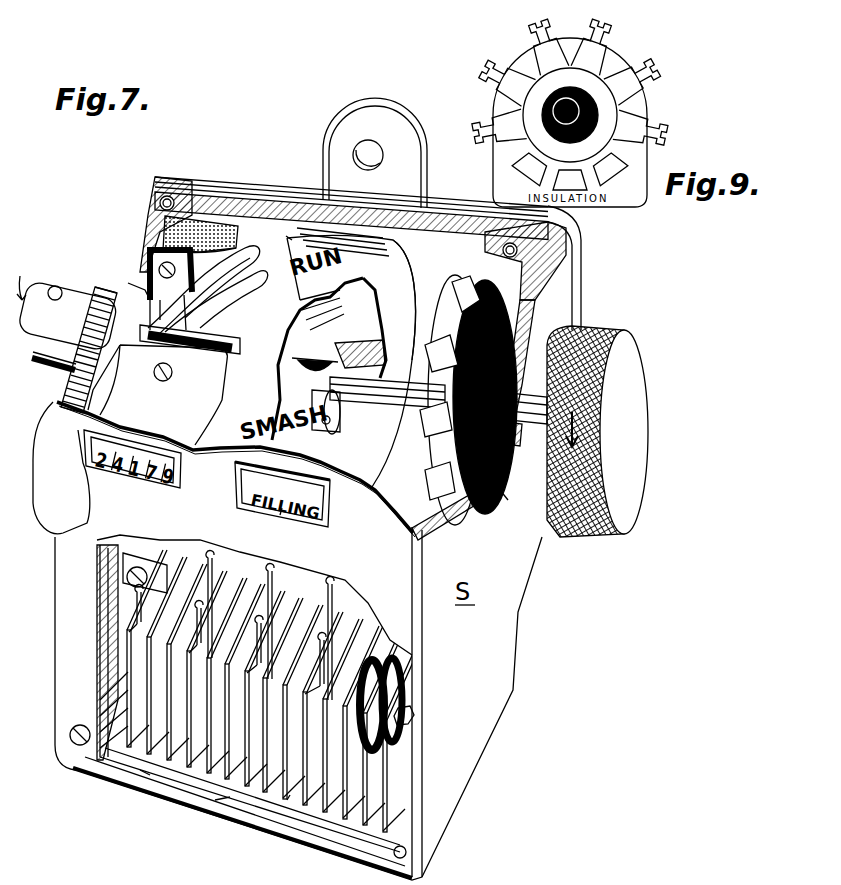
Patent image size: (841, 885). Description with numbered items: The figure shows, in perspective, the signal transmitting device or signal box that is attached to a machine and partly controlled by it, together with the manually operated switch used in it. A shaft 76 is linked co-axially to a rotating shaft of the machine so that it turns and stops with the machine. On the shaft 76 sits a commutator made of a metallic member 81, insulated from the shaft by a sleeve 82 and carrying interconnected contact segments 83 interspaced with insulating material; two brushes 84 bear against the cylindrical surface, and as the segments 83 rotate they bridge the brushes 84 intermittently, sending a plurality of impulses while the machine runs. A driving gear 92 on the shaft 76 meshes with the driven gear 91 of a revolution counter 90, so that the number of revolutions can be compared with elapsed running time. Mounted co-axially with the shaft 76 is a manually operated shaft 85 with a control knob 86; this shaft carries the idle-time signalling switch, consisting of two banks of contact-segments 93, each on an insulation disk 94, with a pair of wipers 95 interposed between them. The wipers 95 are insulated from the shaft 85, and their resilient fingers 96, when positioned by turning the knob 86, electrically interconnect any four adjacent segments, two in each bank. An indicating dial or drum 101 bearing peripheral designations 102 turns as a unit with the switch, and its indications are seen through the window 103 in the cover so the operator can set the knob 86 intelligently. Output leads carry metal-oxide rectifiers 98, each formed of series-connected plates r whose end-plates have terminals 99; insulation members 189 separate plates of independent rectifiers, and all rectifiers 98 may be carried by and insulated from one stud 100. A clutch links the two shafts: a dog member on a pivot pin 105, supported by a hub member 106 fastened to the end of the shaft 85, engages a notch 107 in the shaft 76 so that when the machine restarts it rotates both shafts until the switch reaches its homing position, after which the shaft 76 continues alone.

In FIG. 7, the shaft 76 is at (66, 292).
In FIG. 7, the metallic member 81 is at (238, 335).
In FIG. 7, the sleeve 82 is at (135, 288).
In FIG. 7, the contact segments 83 is at (212, 318).
In FIG. 7, the brushes 84 is at (200, 262).
In FIG. 7, the manually operated shaft 85 is at (510, 425).
In FIG. 9, the manually operated shaft 85 is at (590, 125).
In FIG. 7, the control knob 86 is at (612, 325).
In FIG. 7, the revolution counter 90 is at (160, 411).
In FIG. 7, the driven gear 91 is at (70, 390).
In FIG. 7, the driving gear 92 is at (128, 283).
In FIG. 7, the contact-segments 93 is at (458, 303).
In FIG. 9, the contact-segments 93 is at (520, 72).
In FIG. 7, the insulation disk 94 is at (446, 328).
In FIG. 9, the insulation disk 94 is at (494, 99).
In FIG. 7, the wipers 95 is at (440, 365).
In FIG. 9, the wipers 95 is at (605, 62).
In FIG. 9, the fingers 96 is at (625, 110).
In FIG. 7, the metal-oxide rectifiers 98 is at (215, 800).
In FIG. 7, the terminals 99 is at (185, 565).
In FIG. 7, the stud 100 is at (412, 727).
In FIG. 7, the indicating dial or drum 101 is at (404, 294).
In FIG. 7, the peripheral designations 102 is at (286, 236).
In FIG. 7, the window 103 is at (280, 515).
In FIG. 7, the pivot pin 105 is at (335, 425).
In FIG. 7, the hub member 106 is at (345, 345).
In FIG. 7, the notch 107 is at (312, 363).
In FIG. 7, the insulation members 189 is at (287, 800).
In FIG. 7, the plates r is at (146, 779).